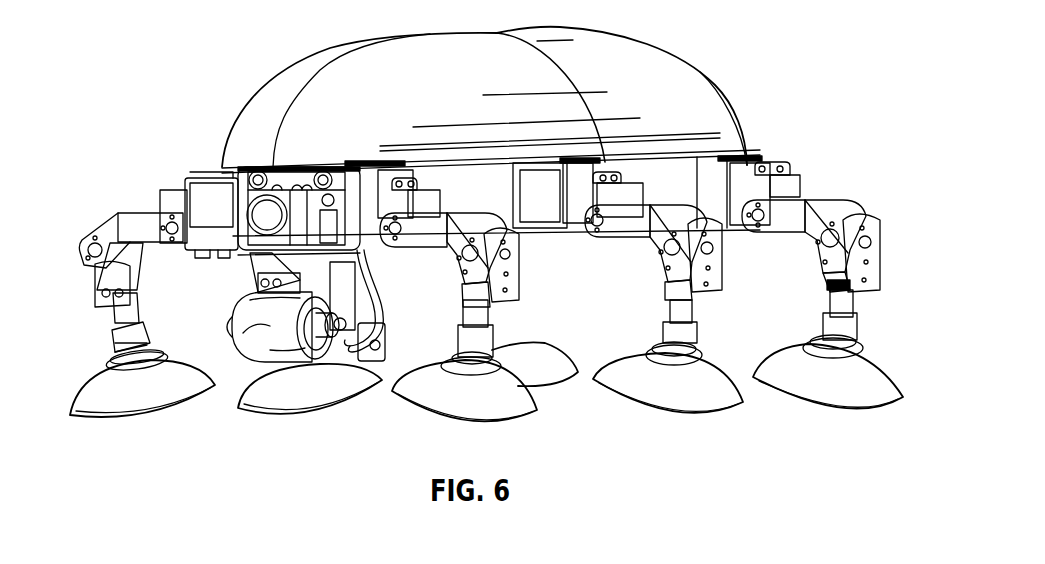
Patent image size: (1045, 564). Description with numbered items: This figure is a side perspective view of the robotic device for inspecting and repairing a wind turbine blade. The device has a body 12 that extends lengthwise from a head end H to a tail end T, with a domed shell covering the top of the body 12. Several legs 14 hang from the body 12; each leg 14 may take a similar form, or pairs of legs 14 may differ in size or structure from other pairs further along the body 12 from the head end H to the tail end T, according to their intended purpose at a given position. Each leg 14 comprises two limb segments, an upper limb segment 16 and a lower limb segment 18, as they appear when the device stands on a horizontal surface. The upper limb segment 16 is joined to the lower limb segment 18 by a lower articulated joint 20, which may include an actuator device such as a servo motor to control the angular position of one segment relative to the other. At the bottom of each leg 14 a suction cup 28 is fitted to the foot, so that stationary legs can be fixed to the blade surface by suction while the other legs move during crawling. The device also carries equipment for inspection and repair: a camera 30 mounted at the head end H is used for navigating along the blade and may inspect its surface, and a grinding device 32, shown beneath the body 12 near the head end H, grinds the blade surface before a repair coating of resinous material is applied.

The body 12 is at (703, 80).
The tail end T is at (740, 115).
The head end H is at (277, 88).
The leg 14 is at (830, 197).
The upper limb segment 16 is at (135, 210).
The lower limb segment 18 is at (90, 277).
The lower articulated joint 20 is at (663, 247).
The suction cup 28 is at (97, 393).
The camera 30 is at (240, 255).
The grinding device 32 is at (250, 333).